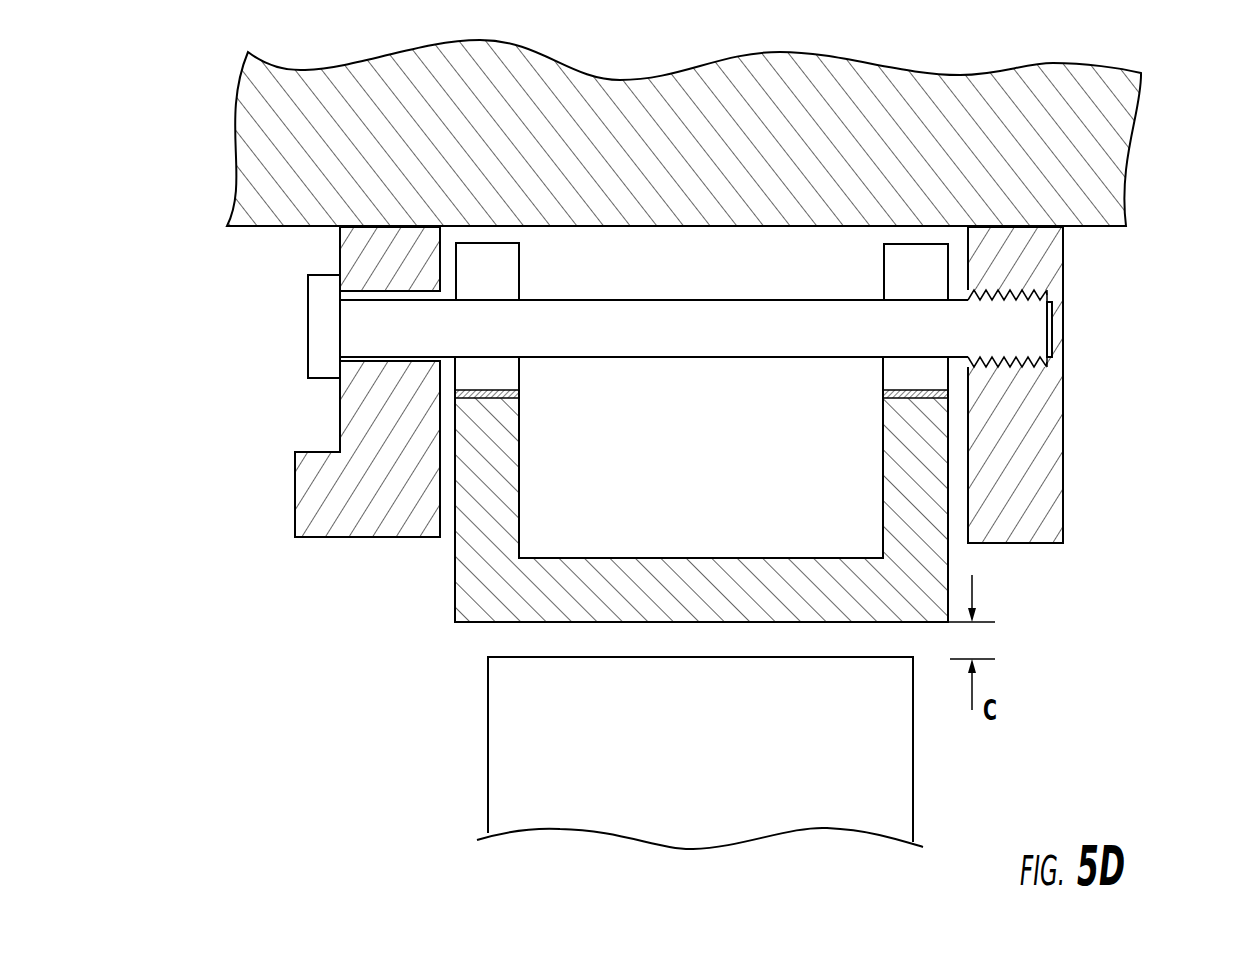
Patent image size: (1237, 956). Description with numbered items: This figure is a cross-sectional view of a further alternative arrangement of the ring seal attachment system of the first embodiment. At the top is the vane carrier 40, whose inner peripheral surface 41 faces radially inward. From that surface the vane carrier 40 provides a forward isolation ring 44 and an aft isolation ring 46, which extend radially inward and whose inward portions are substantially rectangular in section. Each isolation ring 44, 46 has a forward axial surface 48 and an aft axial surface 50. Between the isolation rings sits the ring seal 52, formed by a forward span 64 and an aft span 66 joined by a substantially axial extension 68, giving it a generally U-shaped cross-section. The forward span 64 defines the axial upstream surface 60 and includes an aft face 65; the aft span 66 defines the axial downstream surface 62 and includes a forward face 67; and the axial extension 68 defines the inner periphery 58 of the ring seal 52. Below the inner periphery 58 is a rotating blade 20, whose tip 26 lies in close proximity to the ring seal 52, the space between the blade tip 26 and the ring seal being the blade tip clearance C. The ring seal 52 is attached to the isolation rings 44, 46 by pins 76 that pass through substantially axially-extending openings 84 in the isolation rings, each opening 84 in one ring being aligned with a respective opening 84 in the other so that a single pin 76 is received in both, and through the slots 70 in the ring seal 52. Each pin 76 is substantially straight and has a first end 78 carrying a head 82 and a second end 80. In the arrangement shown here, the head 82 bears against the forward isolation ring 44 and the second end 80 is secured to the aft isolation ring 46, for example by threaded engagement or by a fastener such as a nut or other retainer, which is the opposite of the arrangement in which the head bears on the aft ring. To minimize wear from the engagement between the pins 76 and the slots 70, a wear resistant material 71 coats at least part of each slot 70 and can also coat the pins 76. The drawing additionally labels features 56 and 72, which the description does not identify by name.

The rotating blade 20 is at (701, 767).
The blade tip 26 is at (523, 655).
The vane carrier 40 is at (1123, 124).
The inner peripheral surface 41 is at (261, 227).
The forward isolation ring 44 is at (327, 520).
The aft isolation ring 46 is at (1037, 532).
The forward axial surface 48 is at (340, 393).
The aft axial surface 50 is at (445, 522).
The ring seal 52 is at (740, 580).
The fastener 56 is at (493, 243).
The inner periphery 58 is at (467, 627).
The axial upstream surface 60 is at (456, 444).
The axial downstream surface 62 is at (952, 432).
The forward span 64 is at (503, 502).
The aft face 65 is at (519, 425).
The aft span 66 is at (902, 477).
The forward face 67 is at (883, 518).
The axial extension 68 is at (638, 572).
The slot 70 is at (508, 273).
The wear resistant material 71 is at (492, 390).
The direction of movement 72 is at (560, 285).
The pin 76 is at (735, 336).
The first end 78 is at (298, 306).
The second end 80 is at (1047, 338).
The head 82 is at (323, 333).
The opening 84 is at (385, 280).